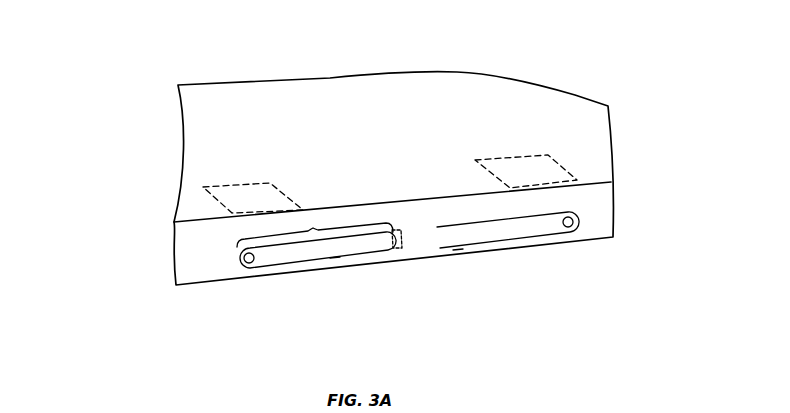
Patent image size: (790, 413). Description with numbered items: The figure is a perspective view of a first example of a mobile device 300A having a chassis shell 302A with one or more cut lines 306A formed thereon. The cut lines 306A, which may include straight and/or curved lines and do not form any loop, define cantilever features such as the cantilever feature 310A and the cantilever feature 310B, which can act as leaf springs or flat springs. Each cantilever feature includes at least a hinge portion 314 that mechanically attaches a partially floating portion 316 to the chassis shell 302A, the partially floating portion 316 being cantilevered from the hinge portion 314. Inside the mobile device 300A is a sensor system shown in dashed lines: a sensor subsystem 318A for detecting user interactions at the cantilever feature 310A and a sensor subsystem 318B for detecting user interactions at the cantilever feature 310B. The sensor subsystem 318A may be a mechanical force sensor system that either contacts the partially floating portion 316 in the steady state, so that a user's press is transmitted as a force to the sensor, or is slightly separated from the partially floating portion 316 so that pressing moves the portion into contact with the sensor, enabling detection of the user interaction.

The mobile device 300A is at (589, 49).
The chassis shell 302A is at (600, 212).
The cut lines 306A is at (330, 258).
The cantilever feature 310A is at (512, 230).
The cantilever feature 310B is at (283, 259).
The hinge portion 314 is at (393, 230).
The partially floating portion 316 is at (313, 229).
The sensor subsystem 318A is at (567, 172).
The sensor subsystem 318B is at (233, 213).